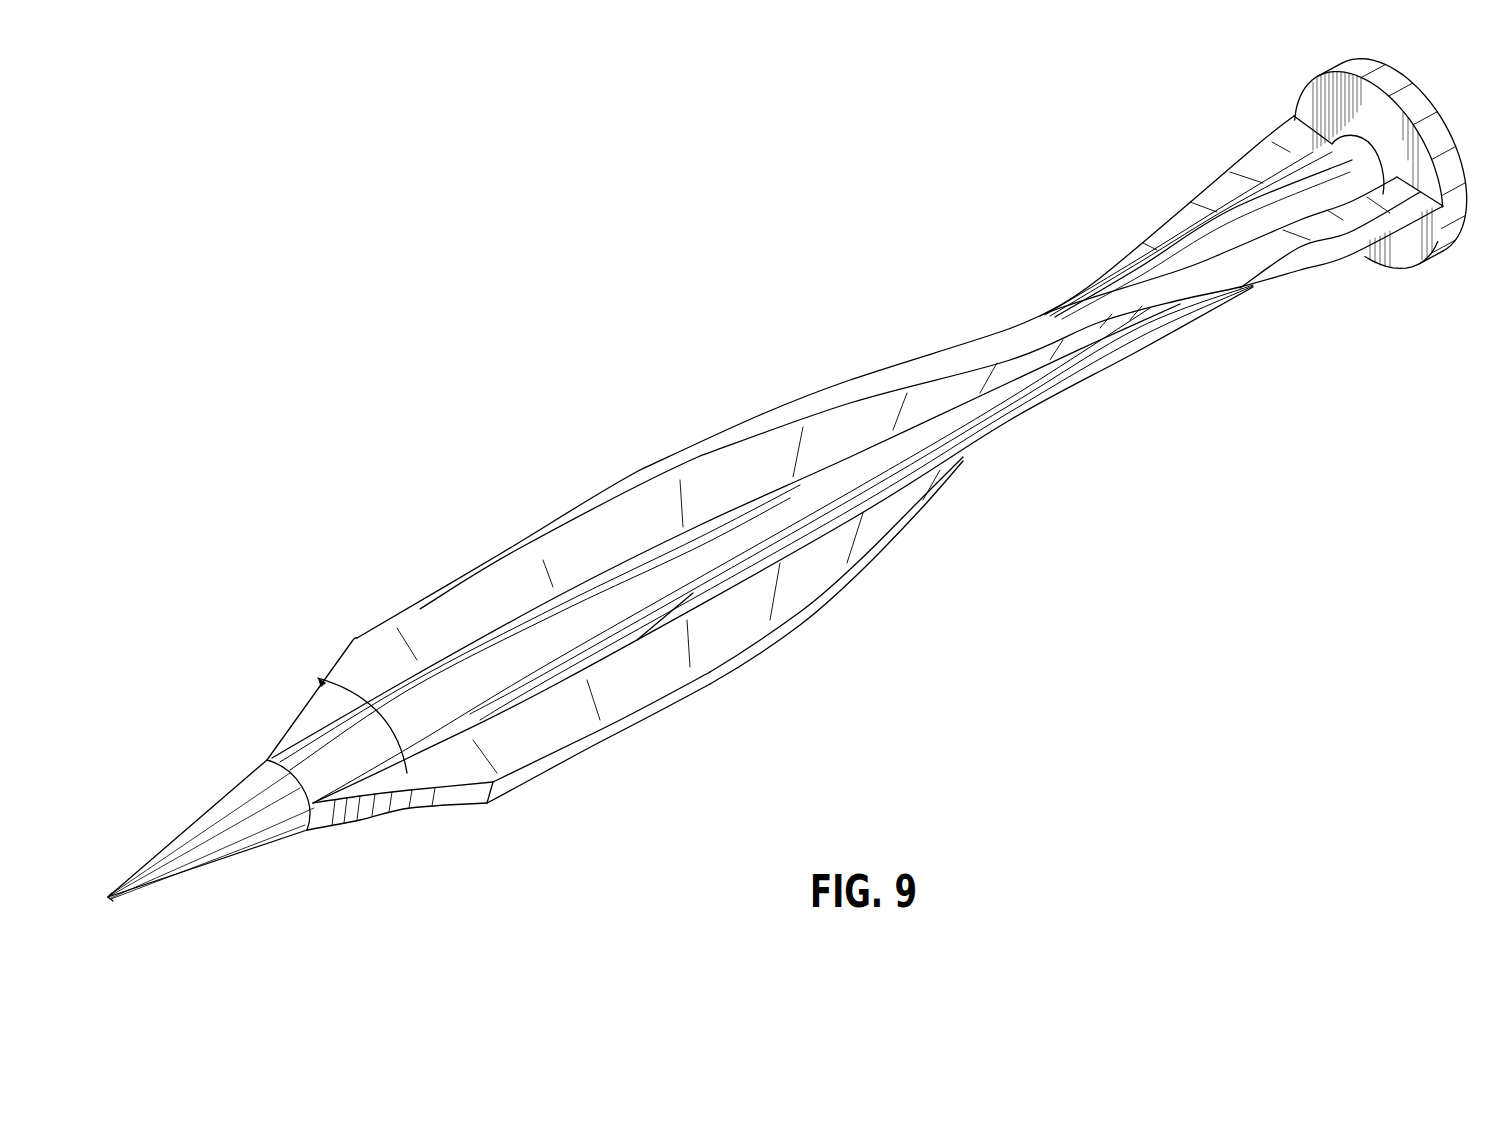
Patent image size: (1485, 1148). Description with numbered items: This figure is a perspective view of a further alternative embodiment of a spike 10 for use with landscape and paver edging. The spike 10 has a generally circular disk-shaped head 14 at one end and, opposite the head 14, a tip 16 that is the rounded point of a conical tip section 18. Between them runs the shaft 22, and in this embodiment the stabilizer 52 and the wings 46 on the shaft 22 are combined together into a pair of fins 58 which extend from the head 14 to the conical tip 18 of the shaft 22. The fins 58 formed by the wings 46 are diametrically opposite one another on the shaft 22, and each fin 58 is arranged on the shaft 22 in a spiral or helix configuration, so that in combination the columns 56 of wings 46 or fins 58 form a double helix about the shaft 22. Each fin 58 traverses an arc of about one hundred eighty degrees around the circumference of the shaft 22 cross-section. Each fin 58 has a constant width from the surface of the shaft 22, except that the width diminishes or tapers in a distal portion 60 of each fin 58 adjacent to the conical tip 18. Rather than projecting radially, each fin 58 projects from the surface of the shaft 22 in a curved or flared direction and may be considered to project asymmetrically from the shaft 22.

The spike 10 is at (434, 217).
The head 14 is at (1420, 99).
The tip 16 is at (113, 902).
The conical tip section 18 is at (206, 822).
The shaft 22 is at (1013, 418).
The wings 46 is at (604, 497).
The stabilizer 52 is at (1282, 152).
The columns 56 is at (265, 736).
The fins 58 is at (681, 453).
The distal portion 60 is at (318, 678).